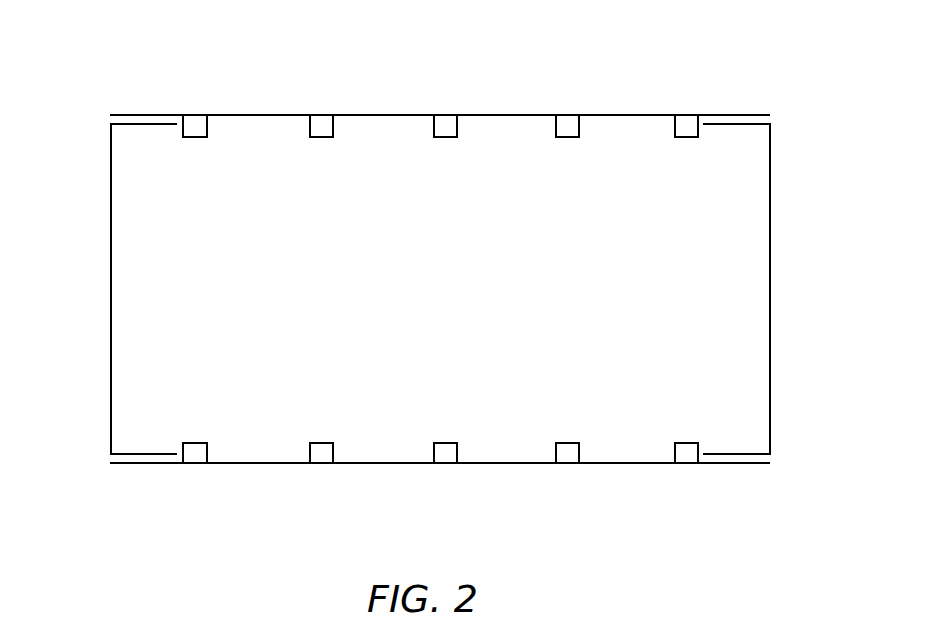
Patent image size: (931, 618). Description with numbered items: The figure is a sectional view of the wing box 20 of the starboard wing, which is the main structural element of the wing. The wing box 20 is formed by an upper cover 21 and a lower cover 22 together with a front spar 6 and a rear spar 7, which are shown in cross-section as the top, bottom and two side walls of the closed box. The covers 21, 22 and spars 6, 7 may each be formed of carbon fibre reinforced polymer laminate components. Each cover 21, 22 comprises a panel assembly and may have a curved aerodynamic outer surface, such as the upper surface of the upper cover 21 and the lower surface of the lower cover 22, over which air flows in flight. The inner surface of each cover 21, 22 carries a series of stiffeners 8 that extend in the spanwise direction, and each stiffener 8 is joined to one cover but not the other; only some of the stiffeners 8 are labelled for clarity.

The wing box 20 is at (786, 81).
The upper cover 21 is at (288, 112).
The lower cover 22 is at (263, 465).
The front spar 6 is at (110, 243).
The rear spar 7 is at (770, 327).
The stiffener 8 is at (333, 127).